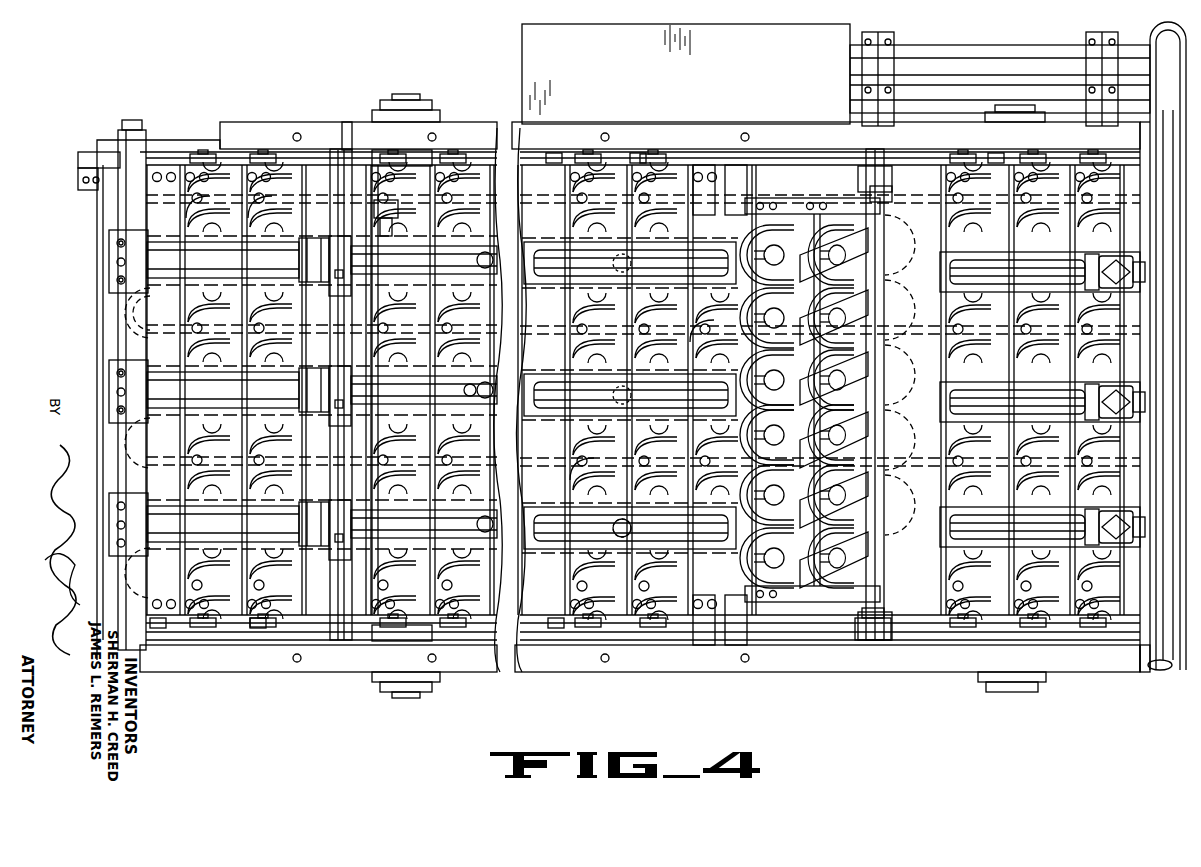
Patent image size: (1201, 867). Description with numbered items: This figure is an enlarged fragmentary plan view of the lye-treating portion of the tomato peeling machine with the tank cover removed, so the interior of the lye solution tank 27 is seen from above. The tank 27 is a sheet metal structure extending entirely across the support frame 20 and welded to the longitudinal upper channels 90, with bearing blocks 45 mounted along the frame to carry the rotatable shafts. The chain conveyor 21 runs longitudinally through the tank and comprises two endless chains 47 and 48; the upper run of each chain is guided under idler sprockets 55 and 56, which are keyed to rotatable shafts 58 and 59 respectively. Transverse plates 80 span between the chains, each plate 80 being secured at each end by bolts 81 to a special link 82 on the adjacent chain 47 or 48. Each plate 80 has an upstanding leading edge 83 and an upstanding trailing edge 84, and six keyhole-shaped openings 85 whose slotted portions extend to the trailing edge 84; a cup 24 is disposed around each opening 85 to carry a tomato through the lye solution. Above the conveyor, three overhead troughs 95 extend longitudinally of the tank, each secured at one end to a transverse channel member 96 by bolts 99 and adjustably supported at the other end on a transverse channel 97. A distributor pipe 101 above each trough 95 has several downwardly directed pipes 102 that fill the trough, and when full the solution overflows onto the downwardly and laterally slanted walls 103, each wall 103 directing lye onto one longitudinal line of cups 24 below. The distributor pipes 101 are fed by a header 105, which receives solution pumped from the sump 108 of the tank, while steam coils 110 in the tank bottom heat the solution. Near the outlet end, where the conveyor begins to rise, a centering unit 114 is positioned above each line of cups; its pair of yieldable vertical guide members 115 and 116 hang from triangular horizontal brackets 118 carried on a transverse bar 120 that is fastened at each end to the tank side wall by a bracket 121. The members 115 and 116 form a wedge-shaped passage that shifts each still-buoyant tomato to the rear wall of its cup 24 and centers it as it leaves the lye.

The support frame 20 is at (380, 668).
The chain conveyor 21 is at (192, 148).
The cups 24 is at (412, 195).
The lye solution tank 27 is at (1130, 668).
The bearing blocks 45 is at (392, 96).
The conveyor chain 47 is at (86, 156).
The conveyor chain 48 is at (672, 650).
The idler sprocket 55 is at (440, 150).
The idler sprocket 56 is at (882, 168).
The rotatable shaft 58 is at (410, 630).
The rotatable shaft 59 is at (892, 196).
The plate 80 is at (250, 178).
The bolts 81 is at (560, 178).
The special link 82 is at (86, 182).
The leading edge 83 is at (300, 188).
The trailing edge 84 is at (245, 180).
The keyhole-shaped openings 85 is at (690, 300).
The longitudinal upper channels 90 is at (345, 134).
The overhead troughs 95 is at (646, 398).
The transverse channel member 96 is at (130, 160).
The transverse channel 97 is at (1120, 628).
The bolts 99 is at (118, 244).
The distributor pipe 101 is at (352, 140).
The downwardly directed pipes 102 is at (494, 295).
The slanted walls 103 is at (150, 290).
The header 105 is at (1165, 675).
The sump 108 is at (522, 60).
The steam coils 110 is at (150, 312).
The centering unit 114 is at (818, 165).
The vertical guide member 115 is at (818, 322).
The vertical guide member 116 is at (818, 364).
The triangular horizontal brackets 118 is at (834, 408).
The transverse bar 120 is at (858, 632).
The bracket 121 is at (812, 178).